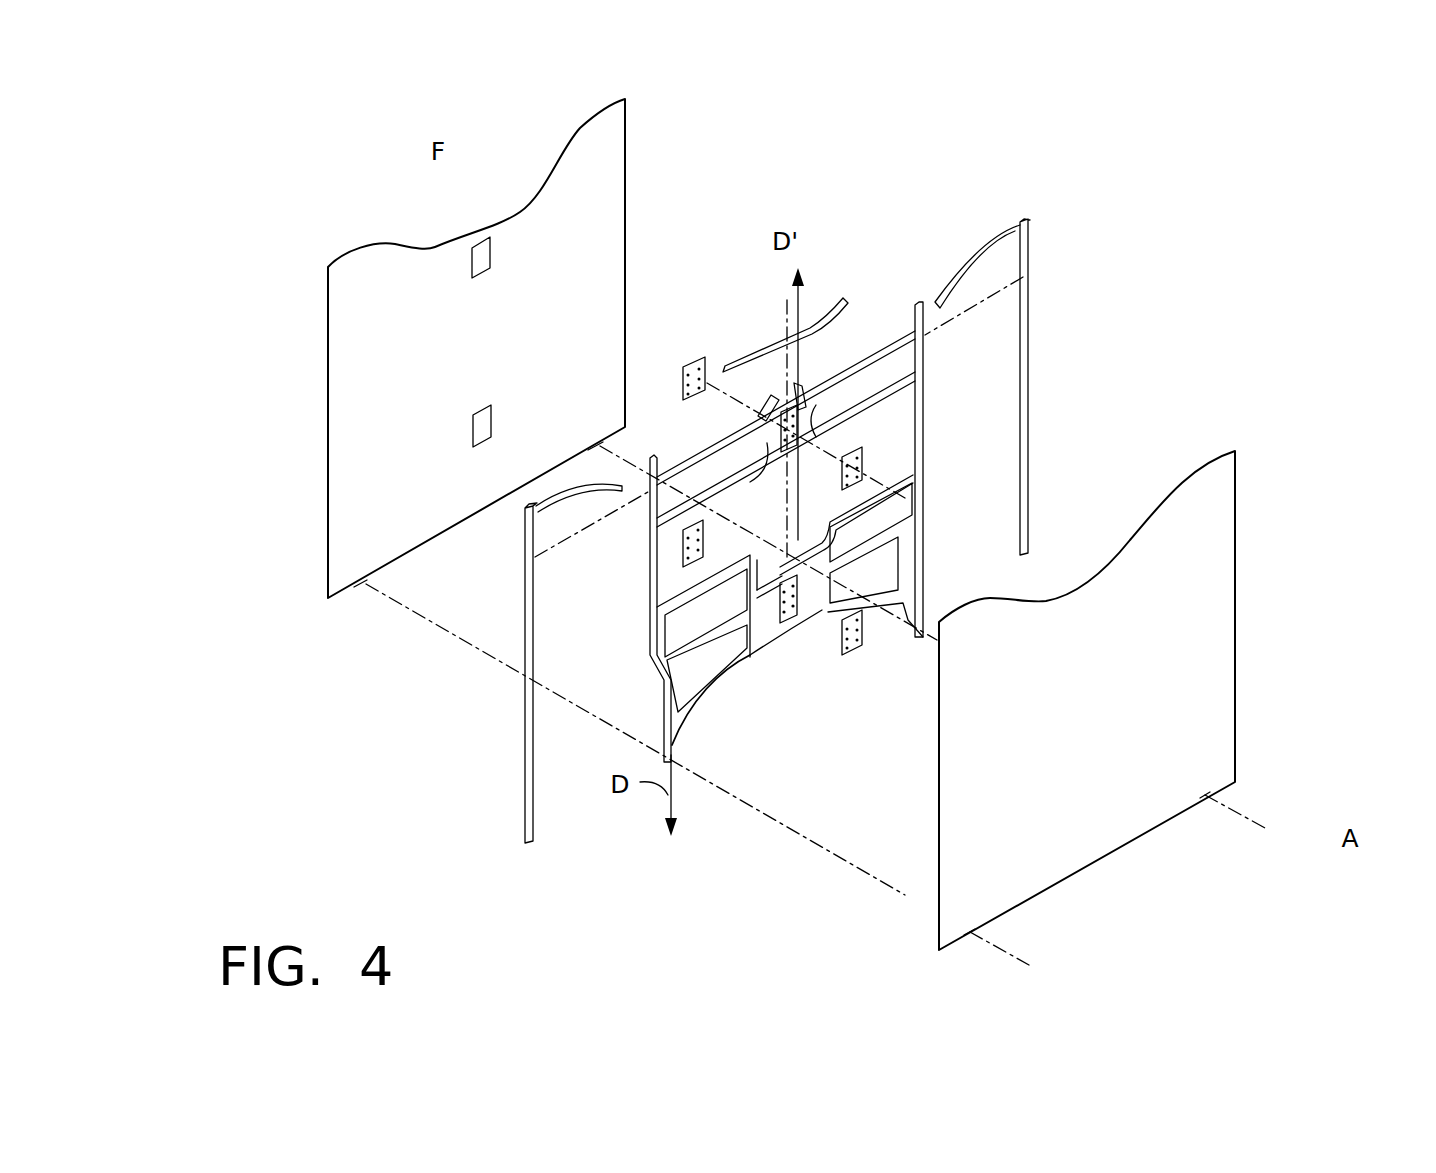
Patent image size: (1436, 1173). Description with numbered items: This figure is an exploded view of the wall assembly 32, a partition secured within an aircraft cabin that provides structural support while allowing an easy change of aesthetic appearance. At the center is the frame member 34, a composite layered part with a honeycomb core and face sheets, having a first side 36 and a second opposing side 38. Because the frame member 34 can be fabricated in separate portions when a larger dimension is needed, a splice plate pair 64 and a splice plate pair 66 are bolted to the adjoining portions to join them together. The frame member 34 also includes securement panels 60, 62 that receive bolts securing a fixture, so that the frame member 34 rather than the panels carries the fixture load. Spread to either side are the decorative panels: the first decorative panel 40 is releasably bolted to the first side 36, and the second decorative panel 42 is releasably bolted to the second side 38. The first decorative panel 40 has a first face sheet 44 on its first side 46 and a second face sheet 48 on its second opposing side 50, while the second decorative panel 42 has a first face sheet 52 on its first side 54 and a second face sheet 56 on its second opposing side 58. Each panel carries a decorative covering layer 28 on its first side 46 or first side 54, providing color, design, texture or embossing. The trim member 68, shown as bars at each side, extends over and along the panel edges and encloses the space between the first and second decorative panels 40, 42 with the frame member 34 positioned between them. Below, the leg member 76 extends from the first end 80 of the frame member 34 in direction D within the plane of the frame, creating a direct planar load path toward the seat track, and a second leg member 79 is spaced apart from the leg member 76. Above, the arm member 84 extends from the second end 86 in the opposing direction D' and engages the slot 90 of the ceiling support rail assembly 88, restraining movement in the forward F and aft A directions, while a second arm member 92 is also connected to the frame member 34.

The covering layer 28 is at (325, 424).
The wall assembly 32 is at (1033, 140).
The frame member 34 is at (888, 347).
The first side 36 is at (882, 406).
The second opposing side 38 is at (683, 585).
The first decorative panel 40 is at (1168, 636).
The second decorative panel 42 is at (398, 272).
The first face sheet 44 is at (1006, 853).
The first side 46 is at (1084, 756).
The second face sheet 48 is at (937, 795).
The second opposing side 50 is at (937, 741).
The first face sheet 52 is at (325, 298).
The first side 54 is at (327, 352).
The second face sheet 56 is at (592, 212).
The second opposing side 58 is at (565, 357).
The securement panel 60 is at (780, 445).
The securement panel 62 is at (768, 630).
The splice plate pair 64 is at (708, 362).
The splice plate pair 66 is at (683, 566).
The trim member 68 is at (525, 598).
The leg member 76 is at (677, 738).
The second leg member 79 is at (918, 612).
The first end 80 is at (666, 704).
The arm member 84 is at (757, 403).
The second end 86 is at (896, 343).
The ceiling support rail assembly 88 is at (833, 300).
The slot 90 is at (783, 350).
The second arm member 92 is at (806, 380).